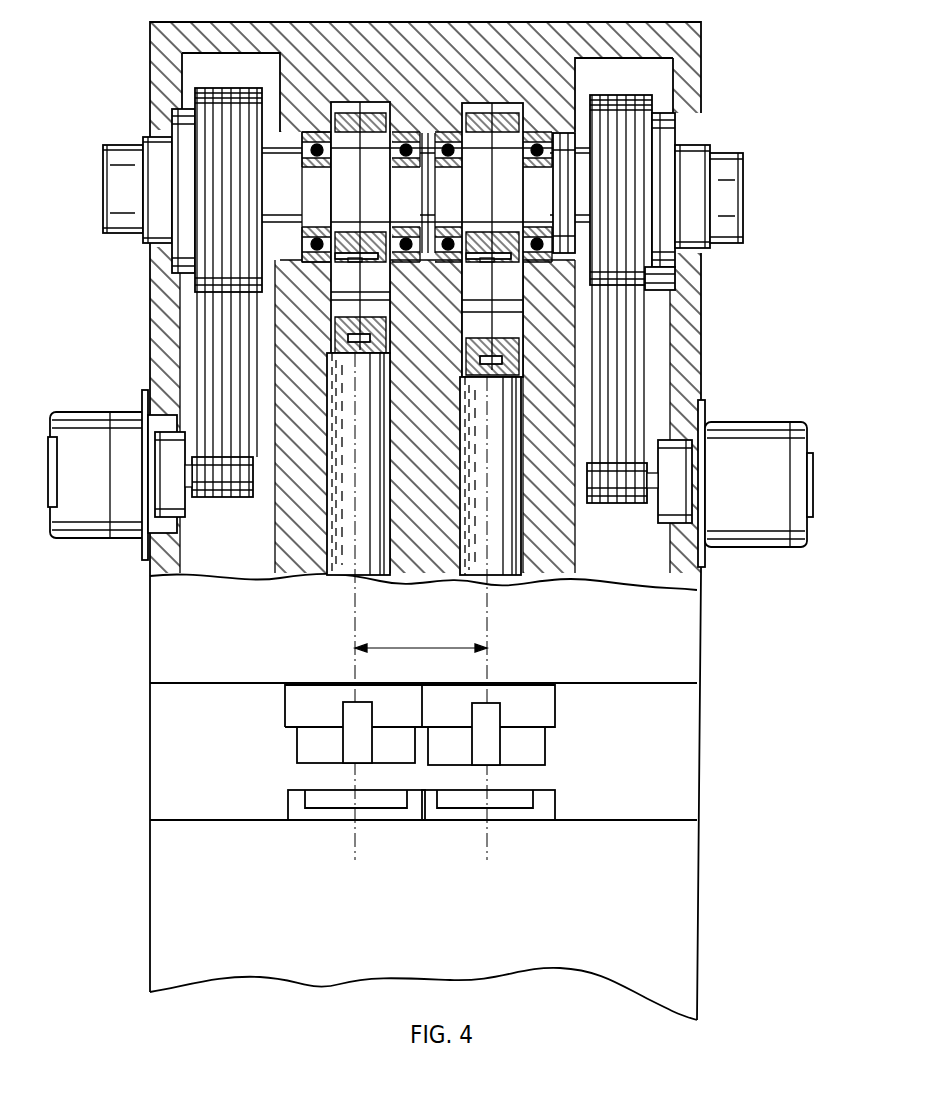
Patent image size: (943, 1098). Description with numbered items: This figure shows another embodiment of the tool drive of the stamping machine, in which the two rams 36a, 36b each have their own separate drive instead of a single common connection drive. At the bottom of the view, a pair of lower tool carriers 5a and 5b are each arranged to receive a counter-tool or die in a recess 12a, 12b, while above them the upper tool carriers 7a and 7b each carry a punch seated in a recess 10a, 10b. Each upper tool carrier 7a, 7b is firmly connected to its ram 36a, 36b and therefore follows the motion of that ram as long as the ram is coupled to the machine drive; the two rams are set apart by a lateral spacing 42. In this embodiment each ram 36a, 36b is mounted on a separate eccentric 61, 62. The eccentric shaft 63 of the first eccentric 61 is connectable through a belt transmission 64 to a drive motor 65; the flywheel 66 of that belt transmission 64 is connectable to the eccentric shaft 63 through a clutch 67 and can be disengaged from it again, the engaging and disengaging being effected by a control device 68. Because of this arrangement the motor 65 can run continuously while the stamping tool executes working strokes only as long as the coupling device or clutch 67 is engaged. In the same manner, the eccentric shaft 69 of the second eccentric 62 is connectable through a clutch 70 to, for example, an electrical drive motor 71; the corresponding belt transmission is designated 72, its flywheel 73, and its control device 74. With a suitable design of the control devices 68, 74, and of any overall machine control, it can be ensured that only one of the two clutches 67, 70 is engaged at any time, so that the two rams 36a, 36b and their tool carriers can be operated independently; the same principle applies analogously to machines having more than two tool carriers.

The lower tool carrier 5a is at (332, 810).
The lower tool carrier 5b is at (490, 813).
The upper tool carrier 7a is at (310, 743).
The upper tool carrier 7b is at (537, 748).
The recess 10a is at (347, 758).
The recess 10b is at (490, 753).
The recess 12a is at (368, 810).
The recess 12b is at (520, 810).
The ram 36a is at (332, 578).
The ram 36b is at (502, 580).
The lateral spacing 42 is at (406, 645).
The eccentric 61 is at (377, 150).
The eccentric 62 is at (507, 177).
The eccentric shaft 63 is at (310, 183).
The belt transmission 64 is at (192, 309).
The drive motor 65 is at (102, 517).
The flywheel 66 is at (226, 92).
The clutch 67 is at (178, 122).
The control device 68 is at (123, 162).
The eccentric shaft 69 is at (568, 163).
The clutch 70 is at (673, 138).
The drive motor 71 is at (725, 443).
The belt transmission 72 is at (655, 342).
The flywheel 73 is at (660, 295).
The control device 74 is at (728, 195).